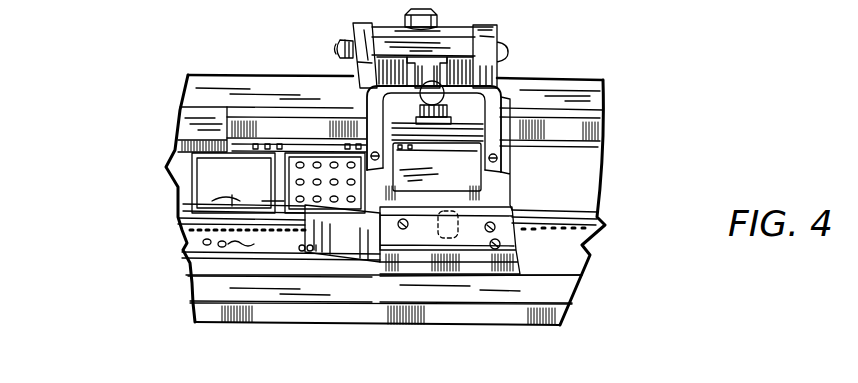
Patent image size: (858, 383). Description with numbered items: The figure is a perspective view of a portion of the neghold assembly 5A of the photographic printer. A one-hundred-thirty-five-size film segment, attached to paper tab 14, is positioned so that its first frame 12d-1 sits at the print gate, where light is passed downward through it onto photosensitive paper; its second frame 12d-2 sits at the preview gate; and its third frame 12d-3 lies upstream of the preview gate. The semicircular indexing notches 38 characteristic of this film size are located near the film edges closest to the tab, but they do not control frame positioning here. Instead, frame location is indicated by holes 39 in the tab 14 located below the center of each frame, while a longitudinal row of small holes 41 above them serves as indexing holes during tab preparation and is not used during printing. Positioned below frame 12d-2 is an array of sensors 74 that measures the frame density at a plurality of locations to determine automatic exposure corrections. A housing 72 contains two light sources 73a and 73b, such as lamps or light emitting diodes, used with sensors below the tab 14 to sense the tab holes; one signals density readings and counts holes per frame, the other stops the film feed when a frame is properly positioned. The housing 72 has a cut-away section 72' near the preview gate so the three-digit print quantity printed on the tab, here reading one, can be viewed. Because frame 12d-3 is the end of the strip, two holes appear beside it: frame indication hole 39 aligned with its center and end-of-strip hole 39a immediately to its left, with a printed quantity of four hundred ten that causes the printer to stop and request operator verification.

The machine bed section 5A is at (229, 78).
The second frame 12d-2 is at (322, 178).
The third frame 12d-3 is at (262, 175).
The semicircular indexing holes or notches 38 is at (220, 193).
The array of sensors 74 is at (300, 179).
The light source 73b is at (437, 159).
The first frame 12d-1 is at (502, 184).
The small holes 41 is at (592, 228).
The housing 72 is at (471, 240).
The holes 39 is at (249, 246).
The end-of-strip hole 39a is at (205, 246).
The light source 73a is at (447, 238).
The cut-away section 72' is at (330, 279).
The tab 14 is at (361, 289).